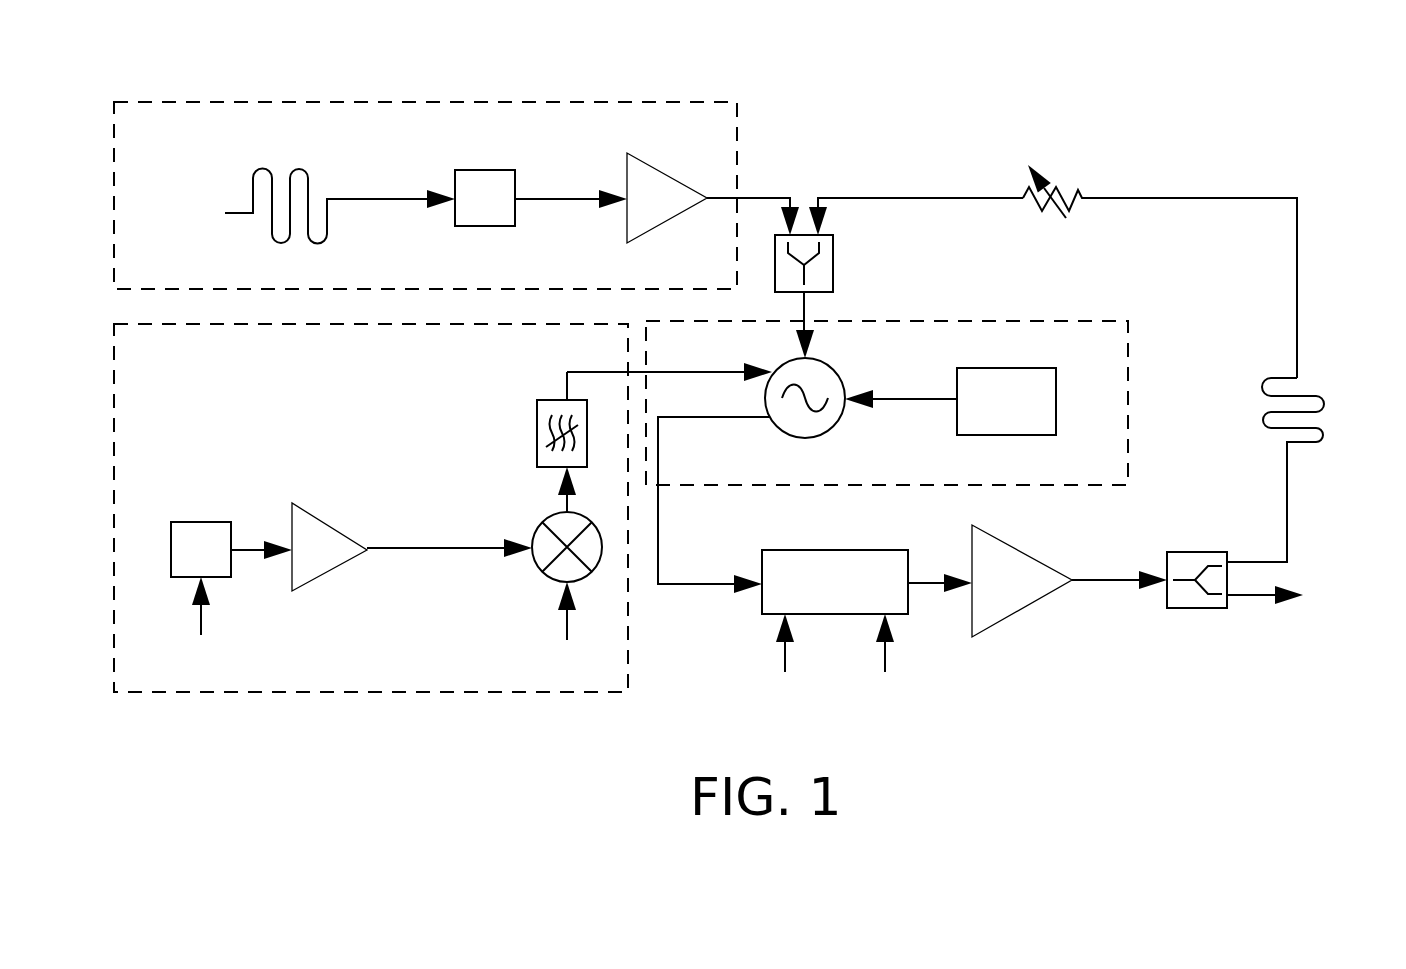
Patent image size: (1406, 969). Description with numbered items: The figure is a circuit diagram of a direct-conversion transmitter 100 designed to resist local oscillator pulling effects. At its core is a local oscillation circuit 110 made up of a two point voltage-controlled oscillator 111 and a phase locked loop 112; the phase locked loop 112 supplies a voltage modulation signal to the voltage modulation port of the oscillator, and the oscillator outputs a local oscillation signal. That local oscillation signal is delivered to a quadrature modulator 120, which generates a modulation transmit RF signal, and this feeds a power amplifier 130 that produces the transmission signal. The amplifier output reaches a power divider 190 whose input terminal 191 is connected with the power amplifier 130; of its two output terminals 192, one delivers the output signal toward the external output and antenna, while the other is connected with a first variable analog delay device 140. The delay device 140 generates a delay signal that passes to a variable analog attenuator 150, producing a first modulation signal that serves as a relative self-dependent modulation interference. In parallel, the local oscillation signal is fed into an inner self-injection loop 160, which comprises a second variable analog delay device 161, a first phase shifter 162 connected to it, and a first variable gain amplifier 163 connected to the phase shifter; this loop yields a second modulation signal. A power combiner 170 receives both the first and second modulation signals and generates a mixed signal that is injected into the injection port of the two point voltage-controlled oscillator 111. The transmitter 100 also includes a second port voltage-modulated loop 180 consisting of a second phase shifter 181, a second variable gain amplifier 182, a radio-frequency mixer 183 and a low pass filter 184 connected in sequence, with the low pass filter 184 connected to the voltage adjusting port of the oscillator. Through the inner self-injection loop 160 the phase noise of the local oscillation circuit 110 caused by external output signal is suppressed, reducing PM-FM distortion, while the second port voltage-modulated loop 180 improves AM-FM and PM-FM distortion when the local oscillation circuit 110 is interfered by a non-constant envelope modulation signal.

The direct-conversion transmitter 100 is at (1245, 135).
The local oscillation circuit 110 is at (1128, 357).
The two point voltage-controlled oscillator 111 is at (810, 438).
The phase locked loop 112 is at (1056, 401).
The quadrature modulator 120 is at (762, 600).
The power amplifier 130 is at (1020, 612).
The first variable analog delay device 140 is at (1322, 395).
The variable analog attenuator 150 is at (1064, 185).
The inner self-injection loop 160 is at (697, 102).
The second variable analog delay device 161 is at (308, 170).
The first phase shifter 162 is at (490, 170).
The first variable gain amplifier 163 is at (665, 172).
The power combiner 170 is at (833, 263).
The second port voltage-modulated loop 180 is at (372, 692).
The second phase shifter 181 is at (231, 532).
The second variable gain amplifier 182 is at (318, 510).
The radio-frequency mixer 183 is at (540, 565).
The low pass filter 184 is at (537, 455).
The power divider 190 is at (1197, 608).
The input terminal 191 is at (1167, 568).
The output terminals 192 is at (1227, 560).